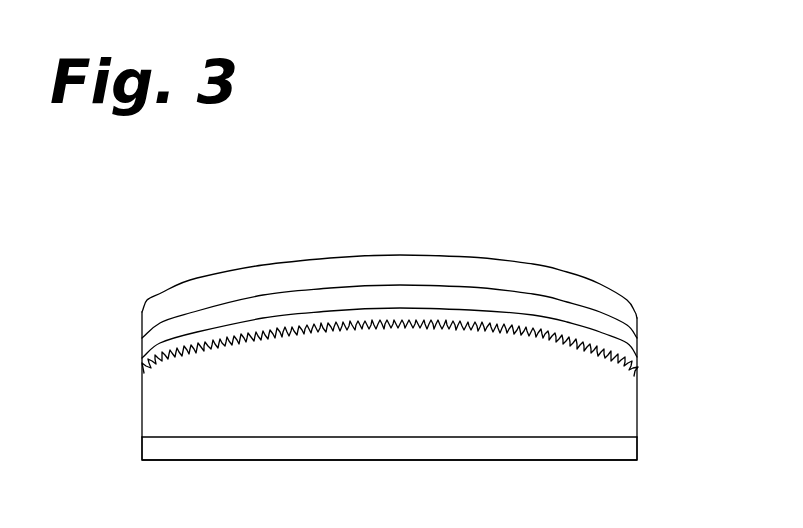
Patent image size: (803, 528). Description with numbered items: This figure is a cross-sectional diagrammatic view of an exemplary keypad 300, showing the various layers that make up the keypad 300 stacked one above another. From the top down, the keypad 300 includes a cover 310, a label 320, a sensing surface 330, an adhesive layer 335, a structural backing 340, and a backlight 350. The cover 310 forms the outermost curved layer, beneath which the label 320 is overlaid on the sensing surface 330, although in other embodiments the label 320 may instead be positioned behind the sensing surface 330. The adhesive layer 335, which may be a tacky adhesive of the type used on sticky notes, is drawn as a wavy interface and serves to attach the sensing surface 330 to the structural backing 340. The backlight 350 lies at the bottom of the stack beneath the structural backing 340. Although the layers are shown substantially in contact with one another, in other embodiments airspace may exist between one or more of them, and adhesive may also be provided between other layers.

The keypad 300 is at (376, 235).
The cover 310 is at (637, 318).
The label 320 is at (637, 350).
The sensing surface 330 is at (637, 367).
The adhesive layer 335 is at (552, 344).
The structural backing 340 is at (415, 414).
The backlight 350 is at (638, 457).